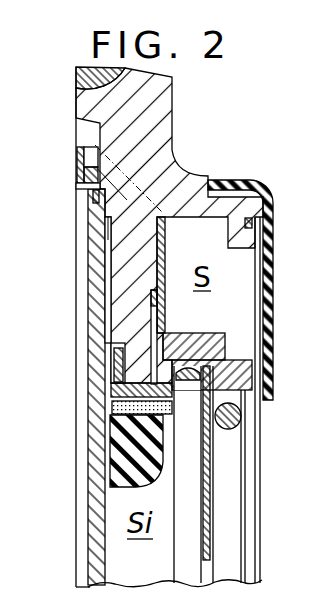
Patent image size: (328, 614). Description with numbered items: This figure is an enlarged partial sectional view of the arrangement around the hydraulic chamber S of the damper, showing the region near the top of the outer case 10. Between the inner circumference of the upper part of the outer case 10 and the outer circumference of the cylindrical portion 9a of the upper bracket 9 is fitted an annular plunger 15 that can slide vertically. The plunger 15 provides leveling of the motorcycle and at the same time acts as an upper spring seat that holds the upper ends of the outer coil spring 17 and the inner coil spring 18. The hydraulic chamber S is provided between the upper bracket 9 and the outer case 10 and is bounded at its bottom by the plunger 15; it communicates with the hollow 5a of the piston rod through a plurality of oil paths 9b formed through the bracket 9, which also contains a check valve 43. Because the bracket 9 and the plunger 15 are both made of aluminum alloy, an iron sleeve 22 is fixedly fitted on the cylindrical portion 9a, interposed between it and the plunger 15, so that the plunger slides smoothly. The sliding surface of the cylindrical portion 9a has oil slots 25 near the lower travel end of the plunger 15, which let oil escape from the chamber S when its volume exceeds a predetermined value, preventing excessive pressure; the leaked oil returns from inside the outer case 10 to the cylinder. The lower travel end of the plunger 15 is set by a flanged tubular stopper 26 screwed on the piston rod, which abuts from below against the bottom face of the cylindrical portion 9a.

The upper bracket 9 is at (158, 135).
The cylindrical portion 9a is at (164, 243).
The oil paths 9b is at (95, 195).
The hollow 5a is at (80, 272).
The check valve 43 is at (77, 173).
The iron sleeve 22 is at (106, 292).
The oil slots 25 is at (150, 318).
The flanged tubular stopper 26 is at (111, 392).
The outer case 10 is at (273, 298).
The annular plunger 15 is at (273, 354).
The outer coil spring 17 is at (231, 424).
The inner coil spring 18 is at (187, 372).